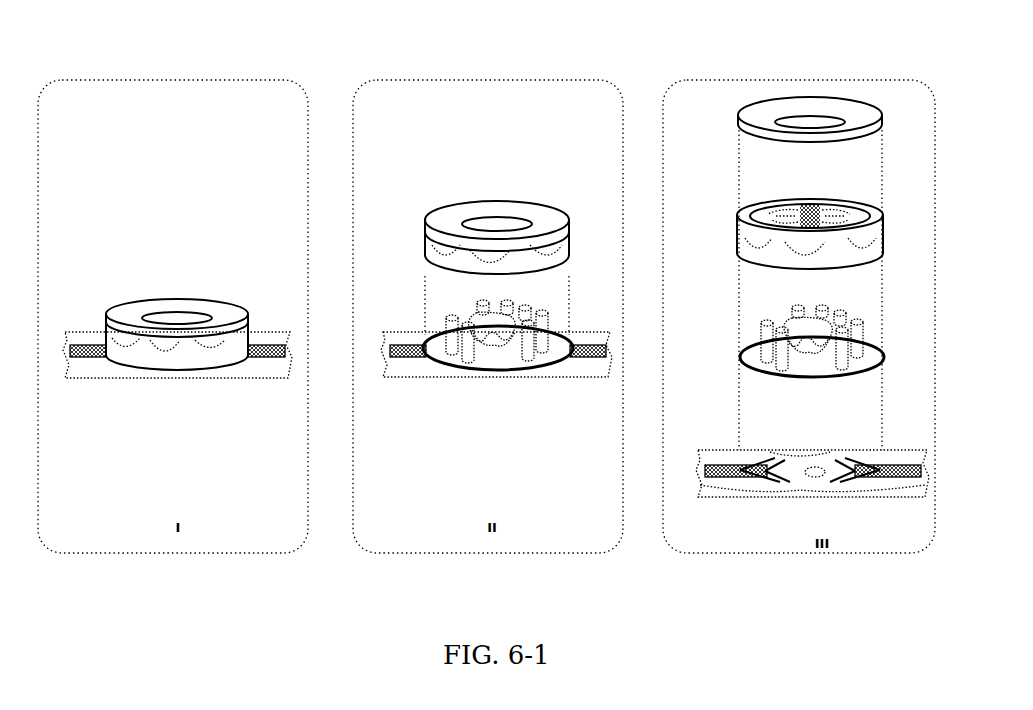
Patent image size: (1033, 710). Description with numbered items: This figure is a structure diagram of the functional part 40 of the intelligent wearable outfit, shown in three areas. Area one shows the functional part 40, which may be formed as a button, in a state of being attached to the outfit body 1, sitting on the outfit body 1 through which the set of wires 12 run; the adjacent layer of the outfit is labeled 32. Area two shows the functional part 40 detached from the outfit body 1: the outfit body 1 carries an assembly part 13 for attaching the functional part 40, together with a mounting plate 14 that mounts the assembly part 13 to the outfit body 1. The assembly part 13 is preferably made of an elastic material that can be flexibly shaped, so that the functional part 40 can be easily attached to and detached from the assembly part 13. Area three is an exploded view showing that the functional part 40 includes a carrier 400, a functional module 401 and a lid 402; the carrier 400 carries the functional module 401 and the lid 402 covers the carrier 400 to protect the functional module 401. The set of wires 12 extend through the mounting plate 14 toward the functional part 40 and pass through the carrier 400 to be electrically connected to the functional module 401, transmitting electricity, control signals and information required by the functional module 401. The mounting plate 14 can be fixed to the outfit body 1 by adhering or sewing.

The outfit body 1 is at (581, 370).
The set of wires 12 is at (593, 343).
The assembly part 13 is at (476, 320).
The mounting plate 14 is at (498, 366).
The base plate 32 is at (265, 332).
The functional part 40 is at (153, 305).
The carrier 400 is at (840, 256).
The functional module 401 is at (798, 200).
The lid 402 is at (789, 119).